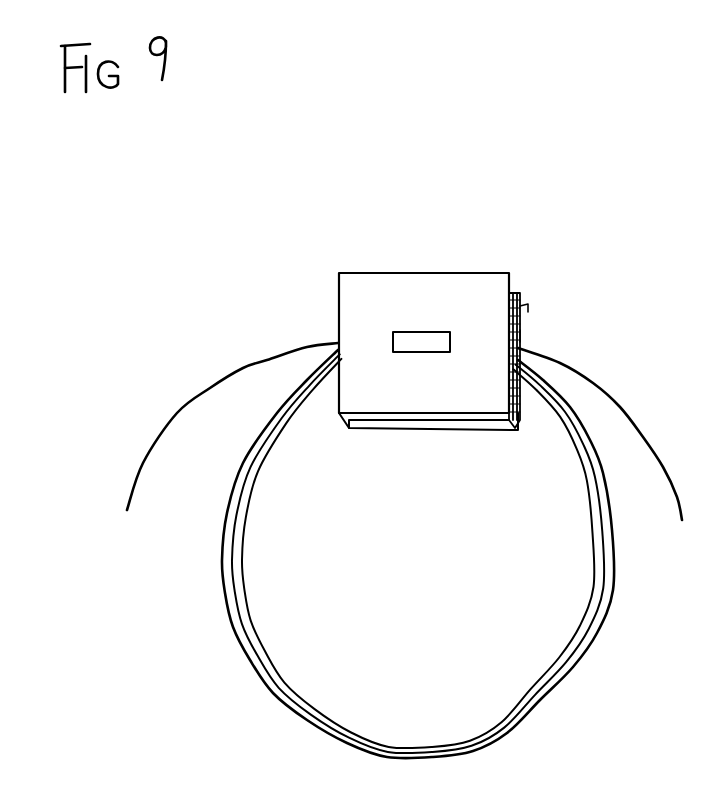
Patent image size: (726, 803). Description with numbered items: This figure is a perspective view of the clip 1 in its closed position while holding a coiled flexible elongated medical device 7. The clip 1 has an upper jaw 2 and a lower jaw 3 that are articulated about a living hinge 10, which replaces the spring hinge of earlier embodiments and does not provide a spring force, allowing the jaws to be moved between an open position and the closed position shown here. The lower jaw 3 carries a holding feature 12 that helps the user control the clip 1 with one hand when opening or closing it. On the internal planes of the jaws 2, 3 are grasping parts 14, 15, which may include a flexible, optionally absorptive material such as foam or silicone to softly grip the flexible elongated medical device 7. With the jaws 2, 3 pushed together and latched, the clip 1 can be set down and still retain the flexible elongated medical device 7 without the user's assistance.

The clip 1 is at (368, 267).
The upper jaw 2 is at (522, 299).
The lower jaw 3 is at (355, 297).
The flexible elongated medical device 7 is at (613, 591).
The living hinge 10 is at (392, 423).
The holding feature 12 is at (420, 337).
The grasping part 14 is at (533, 313).
The grasping part 15 is at (521, 335).